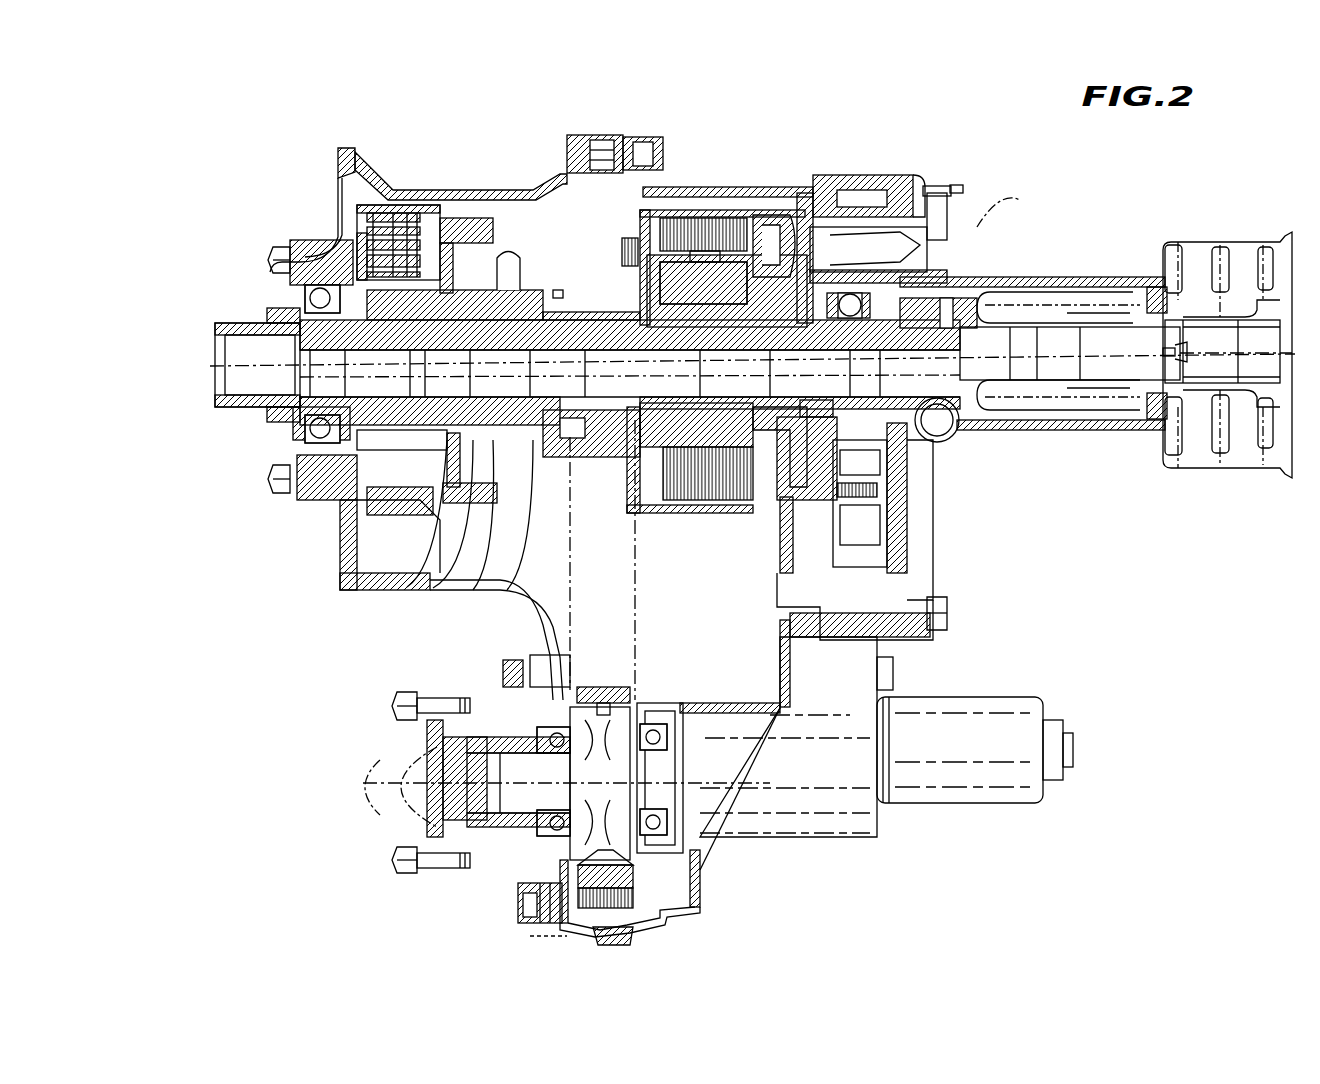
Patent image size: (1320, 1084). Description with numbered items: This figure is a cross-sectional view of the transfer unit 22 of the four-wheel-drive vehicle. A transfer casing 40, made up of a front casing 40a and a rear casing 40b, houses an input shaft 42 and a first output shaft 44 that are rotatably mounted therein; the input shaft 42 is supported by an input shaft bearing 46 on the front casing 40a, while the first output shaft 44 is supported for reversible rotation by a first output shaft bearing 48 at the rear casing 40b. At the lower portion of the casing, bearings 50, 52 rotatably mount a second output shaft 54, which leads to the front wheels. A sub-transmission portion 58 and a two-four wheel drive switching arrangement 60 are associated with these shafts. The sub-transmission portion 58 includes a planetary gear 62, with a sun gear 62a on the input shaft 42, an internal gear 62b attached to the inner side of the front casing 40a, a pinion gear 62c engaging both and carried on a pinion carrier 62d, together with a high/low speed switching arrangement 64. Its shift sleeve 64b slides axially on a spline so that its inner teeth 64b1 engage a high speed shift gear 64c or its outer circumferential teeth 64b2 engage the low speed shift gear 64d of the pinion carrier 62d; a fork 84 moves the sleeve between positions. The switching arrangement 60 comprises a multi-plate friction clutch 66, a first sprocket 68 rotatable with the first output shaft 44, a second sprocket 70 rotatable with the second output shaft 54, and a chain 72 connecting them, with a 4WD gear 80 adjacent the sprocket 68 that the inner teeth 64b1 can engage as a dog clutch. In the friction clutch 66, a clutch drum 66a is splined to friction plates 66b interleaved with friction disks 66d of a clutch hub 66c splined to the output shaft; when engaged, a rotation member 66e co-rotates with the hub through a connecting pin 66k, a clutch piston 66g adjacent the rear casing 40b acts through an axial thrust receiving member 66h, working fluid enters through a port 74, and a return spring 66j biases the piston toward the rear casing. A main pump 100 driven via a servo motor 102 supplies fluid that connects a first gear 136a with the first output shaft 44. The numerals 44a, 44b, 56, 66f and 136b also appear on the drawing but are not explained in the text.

The transfer unit 22 is at (596, 132).
The transfer casing 40 is at (645, 184).
The front casing 40a is at (357, 165).
The rear casing 40b is at (905, 178).
The input shaft 42 is at (240, 322).
The first output shaft 44 is at (1060, 330).
The rear output shaft sleeve 44a is at (1000, 310).
The rear output shaft bore 44b is at (955, 430).
The input shaft bearing 46 is at (310, 440).
The first output shaft bearing 48 is at (935, 465).
The bearing 50 is at (540, 835).
The bearing 52 is at (705, 845).
The second output shaft 54 is at (490, 790).
The input shaft spline 56 is at (262, 378).
The sub-transmission portion 58 is at (545, 178).
The 2-4 wheel drive switching arrangement 60 is at (628, 182).
The planetary gear 62 is at (355, 116).
The sun gear 62a is at (378, 214).
The internal gear 62b is at (400, 235).
The pinion gear 62c is at (412, 255).
The pinion carrier 62d is at (470, 220).
The high/low speed switching arrangement 64 is at (335, 656).
The shift sleeve 64b is at (540, 598).
The inner teeth 64b1 is at (505, 580).
The outer circumferential teeth 64b2 is at (410, 575).
The high speed shift gear 64c is at (433, 575).
The low speed shift gear 64d is at (470, 577).
The multi-plate friction clutch 66 is at (655, 110).
The clutch drum 66a is at (655, 212).
The friction plates 66b is at (700, 262).
The clutch hub 66c is at (672, 220).
The friction disks 66d is at (715, 252).
The rotation member 66e is at (765, 220).
The clutch spring 66f is at (772, 240).
The clutch piston 66g is at (805, 200).
The axial thrust receiving member 66h is at (835, 185).
The return spring 66j is at (698, 490).
The connecting pin 66k is at (632, 220).
The first sprocket 68 is at (600, 460).
The second sprocket 70 is at (603, 686).
The chain 72 is at (650, 588).
The port 74 is at (975, 232).
The 4WD gear 80 is at (555, 290).
The fork 84 is at (510, 250).
The main pump 100 is at (880, 530).
The servo motor 102 is at (928, 758).
The first gear 136a is at (920, 285).
The shift fork gear 136b is at (880, 508).